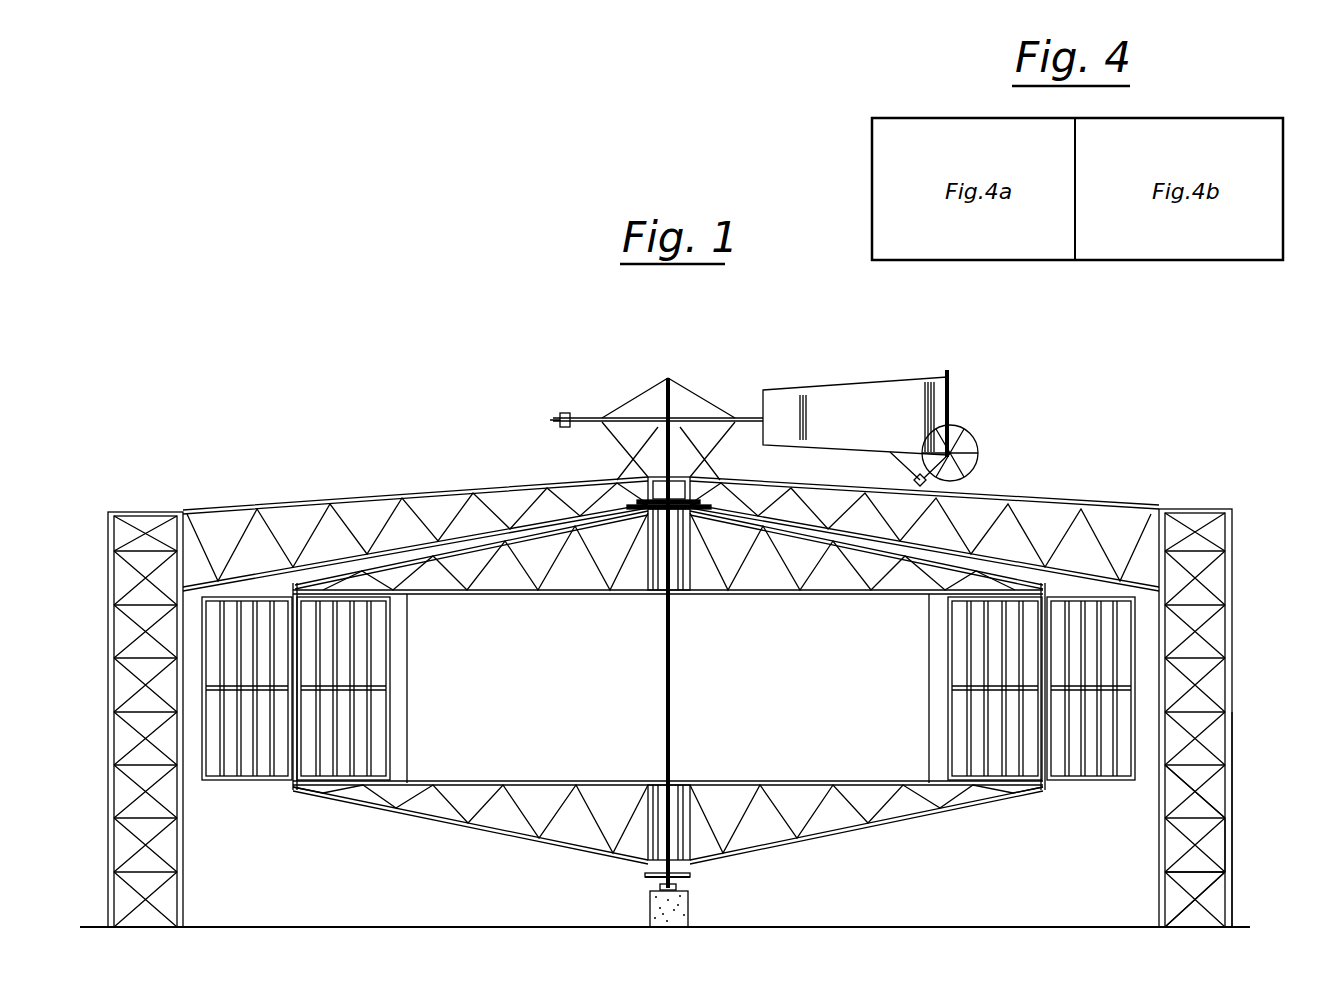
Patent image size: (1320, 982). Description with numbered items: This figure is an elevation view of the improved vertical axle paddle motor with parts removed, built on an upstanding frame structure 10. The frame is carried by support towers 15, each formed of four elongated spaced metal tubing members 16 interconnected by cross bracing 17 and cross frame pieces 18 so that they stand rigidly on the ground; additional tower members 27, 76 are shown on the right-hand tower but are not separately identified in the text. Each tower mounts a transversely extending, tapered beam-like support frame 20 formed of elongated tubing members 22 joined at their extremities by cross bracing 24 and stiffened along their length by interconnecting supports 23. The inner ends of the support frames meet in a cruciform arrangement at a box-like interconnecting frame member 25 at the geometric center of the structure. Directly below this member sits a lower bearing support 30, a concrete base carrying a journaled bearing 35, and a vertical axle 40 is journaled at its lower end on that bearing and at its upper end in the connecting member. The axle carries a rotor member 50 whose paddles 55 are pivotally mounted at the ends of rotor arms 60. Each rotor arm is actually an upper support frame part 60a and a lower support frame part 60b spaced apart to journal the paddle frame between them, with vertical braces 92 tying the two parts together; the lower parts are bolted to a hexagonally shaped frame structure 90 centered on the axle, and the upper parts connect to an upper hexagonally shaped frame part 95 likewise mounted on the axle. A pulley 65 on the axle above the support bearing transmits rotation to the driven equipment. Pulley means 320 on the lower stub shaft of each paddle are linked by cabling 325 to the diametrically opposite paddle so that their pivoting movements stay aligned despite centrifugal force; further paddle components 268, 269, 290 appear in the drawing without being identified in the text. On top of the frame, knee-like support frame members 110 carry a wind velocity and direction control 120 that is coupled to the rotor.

The frame structure 10 is at (1302, 616).
The support tower 15 is at (1238, 848).
The metal tubing member 16 is at (1232, 867).
The cross bracing 17 is at (1210, 885).
The cross frame piece 18 is at (1210, 509).
The support frame 20 is at (1035, 497).
The tubing member 22 is at (1073, 520).
The interconnecting support 23 is at (838, 492).
The cross bracing 24 is at (692, 490).
The interconnecting frame member 25 is at (680, 477).
The column cross brace 27 is at (1205, 782).
The lower bearing support 30 is at (690, 906).
The journaled bearing 35 is at (660, 885).
The vertical axle 40 is at (670, 670).
The rotor member 50 is at (963, 716).
The paddle 55 is at (1083, 788).
The rotor arm 60 is at (782, 600).
The upper support frame part 60a is at (850, 596).
The lower support frame part 60b is at (748, 783).
The pulley 65 is at (690, 875).
The column outer chord 76 is at (1232, 778).
The hexagonally shaped frame structure 90 is at (680, 783).
The vertical brace 92 is at (925, 705).
The upper hexagonally shaped frame part 95 is at (677, 596).
The knee-like support frame member 110 is at (640, 452).
The wind velocity and direction control 120 is at (820, 366).
The vane panel 268 is at (382, 688).
The vane slat 269 is at (350, 695).
The rotor frame end post 290 is at (293, 795).
The pulley means 320 is at (293, 782).
The cabling 325 is at (510, 777).